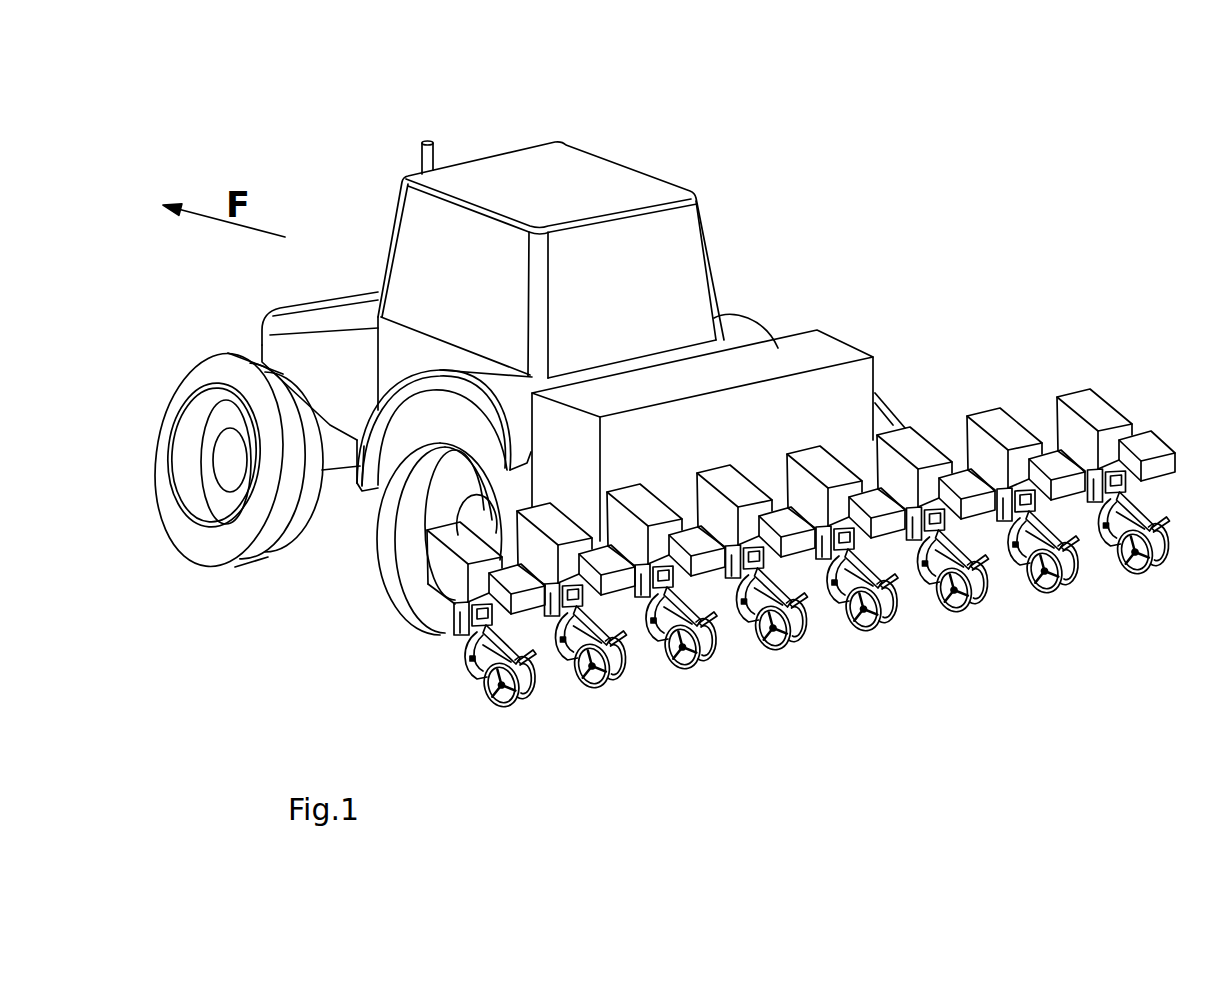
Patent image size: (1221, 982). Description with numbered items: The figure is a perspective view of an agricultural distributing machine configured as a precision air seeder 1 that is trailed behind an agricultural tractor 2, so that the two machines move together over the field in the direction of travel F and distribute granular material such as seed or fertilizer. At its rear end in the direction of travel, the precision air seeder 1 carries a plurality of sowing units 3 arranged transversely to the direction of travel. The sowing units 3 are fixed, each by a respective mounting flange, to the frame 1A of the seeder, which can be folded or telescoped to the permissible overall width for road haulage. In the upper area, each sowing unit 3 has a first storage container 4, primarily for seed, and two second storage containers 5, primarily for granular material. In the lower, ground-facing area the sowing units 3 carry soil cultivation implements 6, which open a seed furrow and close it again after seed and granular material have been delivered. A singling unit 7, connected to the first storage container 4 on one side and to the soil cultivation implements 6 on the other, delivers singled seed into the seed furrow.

The precision air seeder 1 is at (991, 311).
The frame 1A is at (881, 418).
The agricultural tractor 2 is at (656, 134).
The sowing units 3 is at (844, 656).
The first storage container 4 is at (1067, 417).
The second storage containers 5 is at (1155, 444).
The soil cultivation implements 6 is at (546, 724).
The singling unit 7 is at (1090, 467).